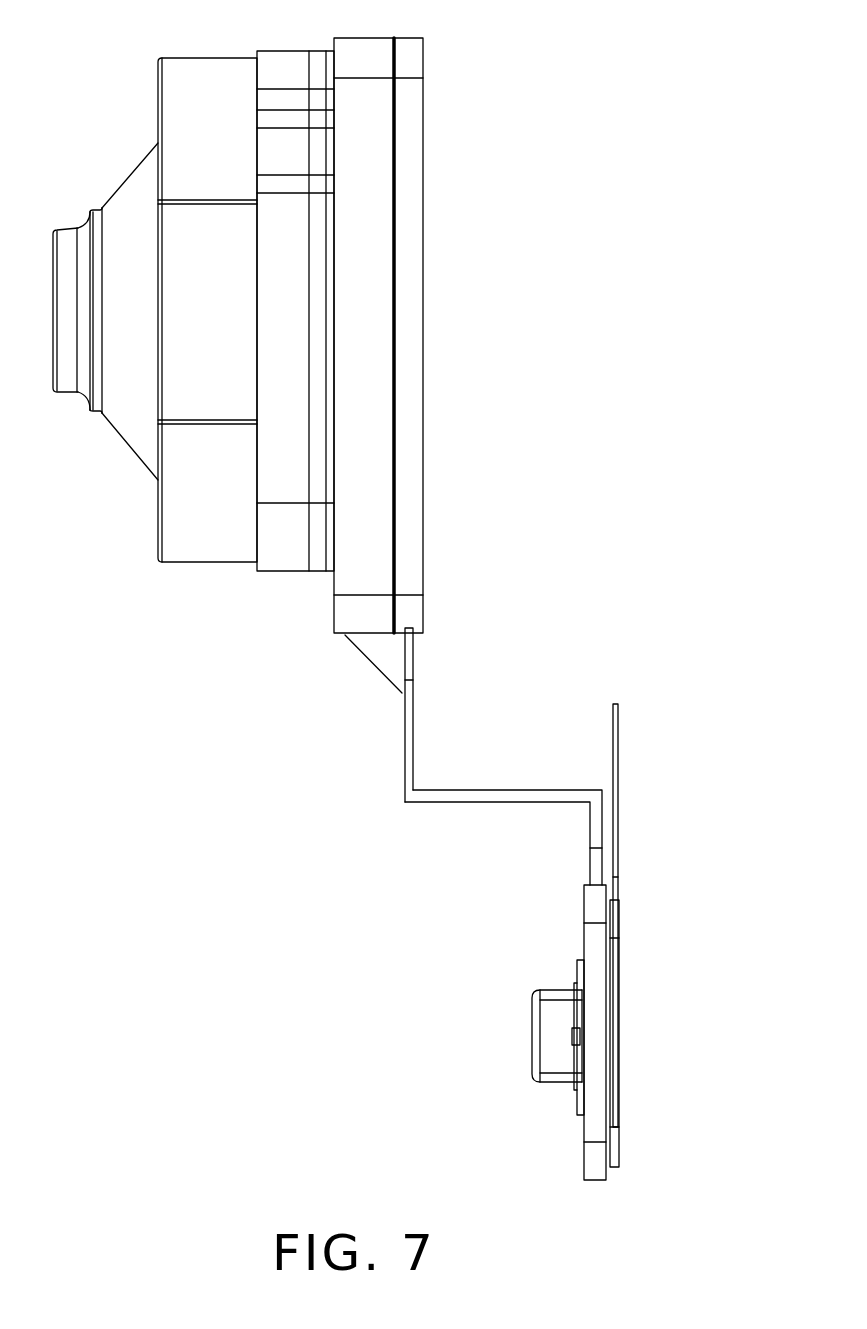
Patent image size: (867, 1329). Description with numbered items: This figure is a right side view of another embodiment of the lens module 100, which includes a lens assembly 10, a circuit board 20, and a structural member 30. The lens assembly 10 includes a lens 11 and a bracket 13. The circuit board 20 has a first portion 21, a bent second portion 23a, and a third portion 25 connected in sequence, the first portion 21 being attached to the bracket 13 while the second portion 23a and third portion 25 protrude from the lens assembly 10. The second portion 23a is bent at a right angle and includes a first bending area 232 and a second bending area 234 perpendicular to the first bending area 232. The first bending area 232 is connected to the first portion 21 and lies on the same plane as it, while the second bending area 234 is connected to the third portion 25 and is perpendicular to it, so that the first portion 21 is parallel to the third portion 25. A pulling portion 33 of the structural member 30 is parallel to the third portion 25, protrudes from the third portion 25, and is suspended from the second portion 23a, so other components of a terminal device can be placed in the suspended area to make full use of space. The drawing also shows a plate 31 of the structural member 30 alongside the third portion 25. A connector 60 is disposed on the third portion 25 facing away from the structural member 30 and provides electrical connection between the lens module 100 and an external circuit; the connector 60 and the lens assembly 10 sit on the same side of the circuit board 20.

The lens module 100 is at (114, 44).
The lens assembly 10 is at (500, 138).
The lens 11 is at (233, 157).
The bracket 13 is at (378, 240).
The circuit board 20 is at (232, 755).
The first portion 21 is at (412, 582).
The second portion 23a is at (307, 780).
The first bending area 232 is at (409, 757).
The second bending area 234 is at (467, 795).
The third portion 25 is at (597, 948).
The structural member 30 is at (694, 870).
The first fixing plate 31 is at (615, 960).
The pulling portion 33 is at (617, 847).
The connector 60 is at (550, 1047).